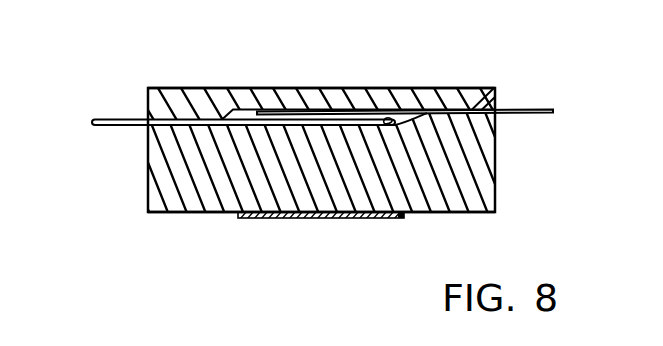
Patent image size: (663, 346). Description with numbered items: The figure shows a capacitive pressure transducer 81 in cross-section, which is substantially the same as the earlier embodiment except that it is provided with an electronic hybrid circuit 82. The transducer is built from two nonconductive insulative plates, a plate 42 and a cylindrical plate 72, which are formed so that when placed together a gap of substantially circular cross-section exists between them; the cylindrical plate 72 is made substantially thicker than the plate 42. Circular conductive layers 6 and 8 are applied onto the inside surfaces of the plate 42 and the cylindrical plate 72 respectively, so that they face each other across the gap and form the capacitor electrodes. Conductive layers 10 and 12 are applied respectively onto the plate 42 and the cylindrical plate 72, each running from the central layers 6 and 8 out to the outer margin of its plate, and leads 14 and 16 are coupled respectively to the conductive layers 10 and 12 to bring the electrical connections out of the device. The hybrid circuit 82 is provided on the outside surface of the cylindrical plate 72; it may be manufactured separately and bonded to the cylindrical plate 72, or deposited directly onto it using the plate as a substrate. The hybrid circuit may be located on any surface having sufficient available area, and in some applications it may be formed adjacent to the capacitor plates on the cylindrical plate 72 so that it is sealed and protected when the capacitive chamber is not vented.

The circular conductive layer 6 is at (337, 108).
The circular conductive layer 8 is at (386, 123).
The conductive layer 10 is at (490, 88).
The conductive layer 12 is at (158, 119).
The lead 14 is at (547, 109).
The lead 16 is at (106, 120).
The plate 42 is at (397, 88).
The cylindrical plate 72 is at (178, 205).
The capacitive pressure transducer 81 is at (459, 58).
The hybrid circuit 82 is at (333, 215).